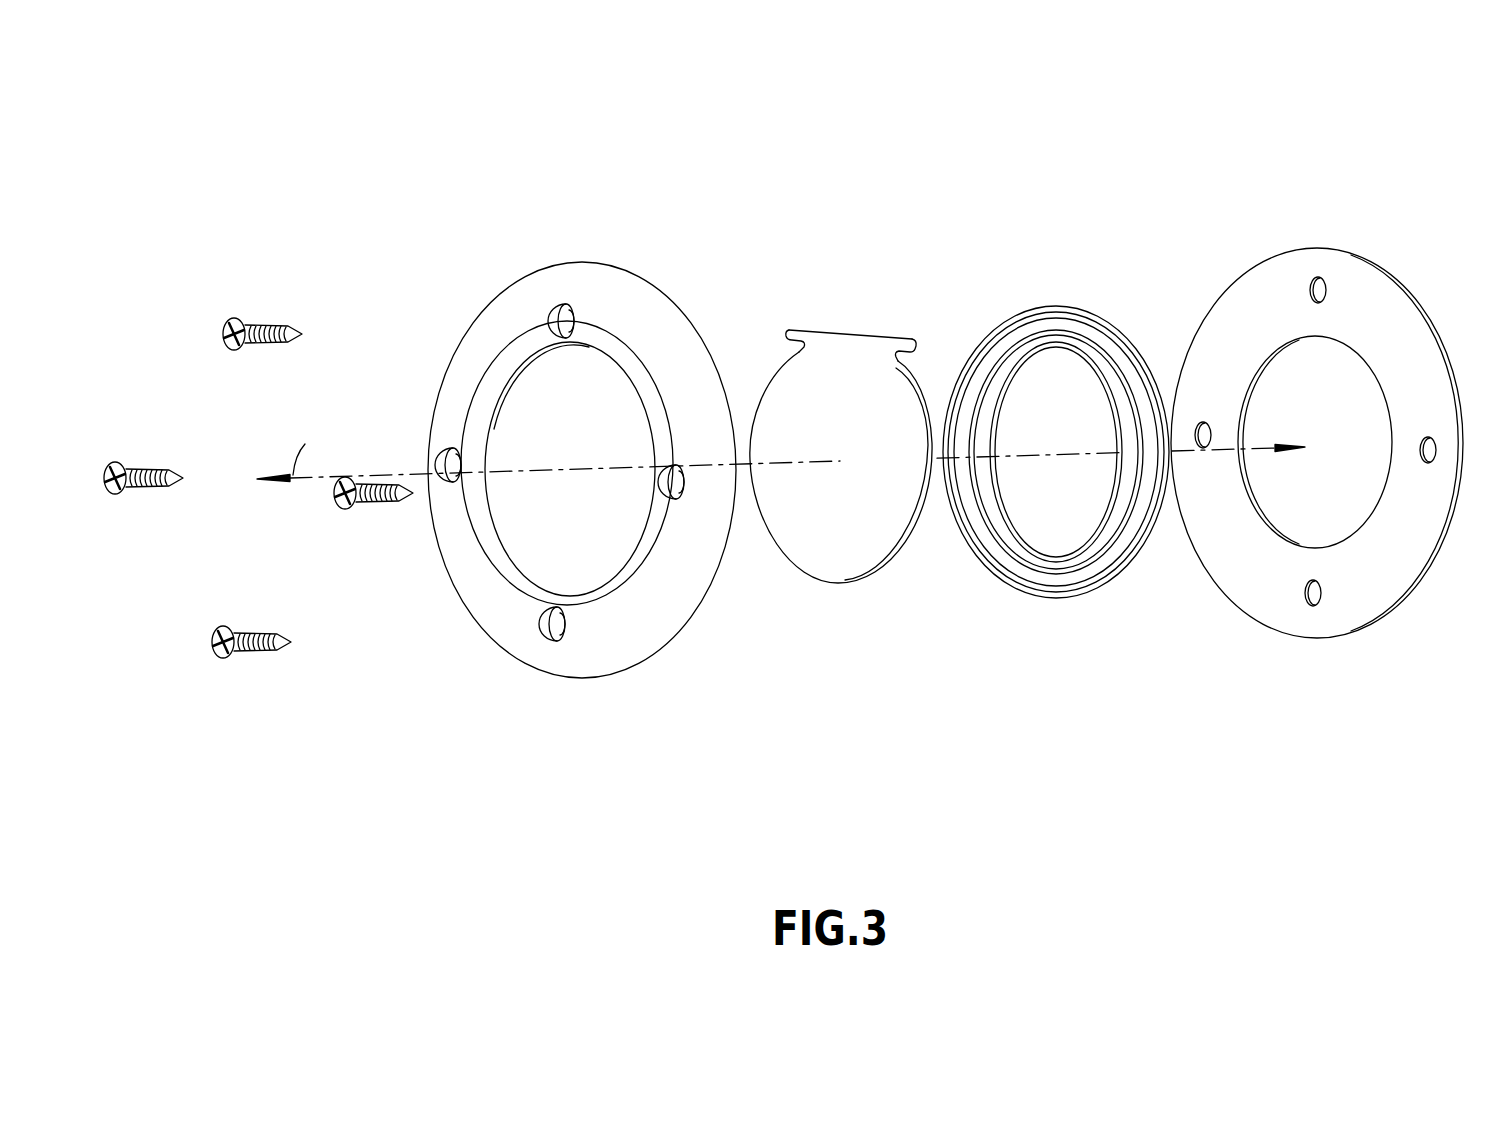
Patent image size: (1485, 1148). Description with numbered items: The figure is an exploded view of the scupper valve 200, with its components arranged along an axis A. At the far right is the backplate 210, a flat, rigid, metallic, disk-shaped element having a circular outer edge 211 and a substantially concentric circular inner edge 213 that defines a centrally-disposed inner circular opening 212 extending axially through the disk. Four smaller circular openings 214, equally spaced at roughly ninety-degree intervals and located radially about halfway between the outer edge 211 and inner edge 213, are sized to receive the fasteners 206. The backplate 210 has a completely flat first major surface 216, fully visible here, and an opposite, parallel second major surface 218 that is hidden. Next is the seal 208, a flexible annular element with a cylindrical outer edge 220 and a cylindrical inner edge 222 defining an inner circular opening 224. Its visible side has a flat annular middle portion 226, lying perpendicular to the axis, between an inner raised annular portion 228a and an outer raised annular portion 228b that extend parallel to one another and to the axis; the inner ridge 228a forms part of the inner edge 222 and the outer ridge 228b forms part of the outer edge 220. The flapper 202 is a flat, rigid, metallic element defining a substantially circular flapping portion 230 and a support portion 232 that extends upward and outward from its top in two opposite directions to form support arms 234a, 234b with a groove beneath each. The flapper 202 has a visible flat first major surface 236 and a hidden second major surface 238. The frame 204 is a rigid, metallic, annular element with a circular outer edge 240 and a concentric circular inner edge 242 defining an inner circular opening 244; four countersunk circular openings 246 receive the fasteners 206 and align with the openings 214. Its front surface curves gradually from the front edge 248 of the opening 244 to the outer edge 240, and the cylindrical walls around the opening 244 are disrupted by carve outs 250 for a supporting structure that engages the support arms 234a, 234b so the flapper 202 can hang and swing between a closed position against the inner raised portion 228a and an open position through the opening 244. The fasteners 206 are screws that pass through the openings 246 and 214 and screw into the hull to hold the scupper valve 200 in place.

The scupper valve 200 is at (1235, 128).
The flapper 202 is at (850, 744).
The frame 204 is at (595, 739).
The fasteners 206 is at (272, 722).
The seal 208 is at (1053, 744).
The backplate 210 is at (1305, 749).
The circular outer edge 211 is at (1333, 637).
The inner circular opening 212 is at (1345, 497).
The circular inner edge 213 is at (1390, 417).
The circular openings 214 is at (1322, 287).
The first major surface 216 is at (1238, 315).
The second major surface 218 is at (1247, 583).
The cylindrical outer edge 220 is at (1006, 318).
The cylindrical inner edge 222 is at (1118, 425).
The inner circular opening 224 is at (1052, 540).
The flat annular middle portion 226 is at (1077, 334).
The inner raised annular portion 228a is at (1108, 520).
The outer raised annular portion 228b is at (982, 568).
The flapping portion 230 is at (823, 545).
The support portion 232 is at (848, 335).
The support arm 234a is at (800, 332).
The support arm 234b is at (897, 338).
The first major surface 236 is at (850, 428).
The second major surface 238 is at (855, 540).
The circular outer edge 240 is at (675, 635).
The circular inner edge 242 is at (525, 570).
The inner circular opening 244 is at (526, 524).
The countersunk circular openings 246 is at (543, 297).
The front edge 248 is at (629, 388).
The carve outs 250 is at (538, 359).